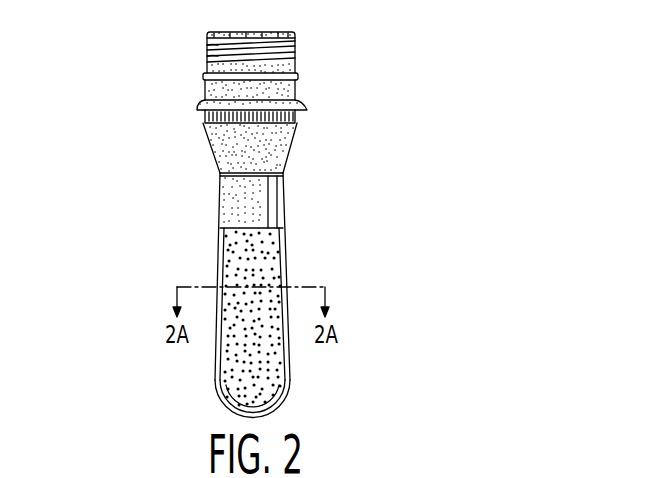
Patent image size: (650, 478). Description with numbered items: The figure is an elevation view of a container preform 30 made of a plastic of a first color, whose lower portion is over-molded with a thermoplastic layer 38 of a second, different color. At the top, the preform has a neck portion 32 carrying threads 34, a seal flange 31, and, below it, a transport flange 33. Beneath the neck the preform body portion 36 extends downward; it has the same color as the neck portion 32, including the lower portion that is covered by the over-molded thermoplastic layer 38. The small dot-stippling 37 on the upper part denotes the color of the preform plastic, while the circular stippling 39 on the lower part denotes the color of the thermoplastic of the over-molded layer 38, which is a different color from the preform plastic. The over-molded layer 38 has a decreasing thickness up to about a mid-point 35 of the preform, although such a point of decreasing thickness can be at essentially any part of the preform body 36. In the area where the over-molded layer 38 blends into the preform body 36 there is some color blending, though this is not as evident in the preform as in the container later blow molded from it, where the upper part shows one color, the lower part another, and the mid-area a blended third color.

The preform 30 is at (337, 103).
The seal flange 31 is at (298, 78).
The neck portion 32 is at (205, 91).
The transport flange 33 is at (305, 110).
The threads 34 is at (208, 48).
The mid-point 35 is at (220, 278).
The preform body portion 36 is at (277, 212).
The small dot-stippling 37 is at (240, 205).
The over-molded thermoplastic layer 38 is at (292, 385).
The circular stippling 39 is at (238, 367).